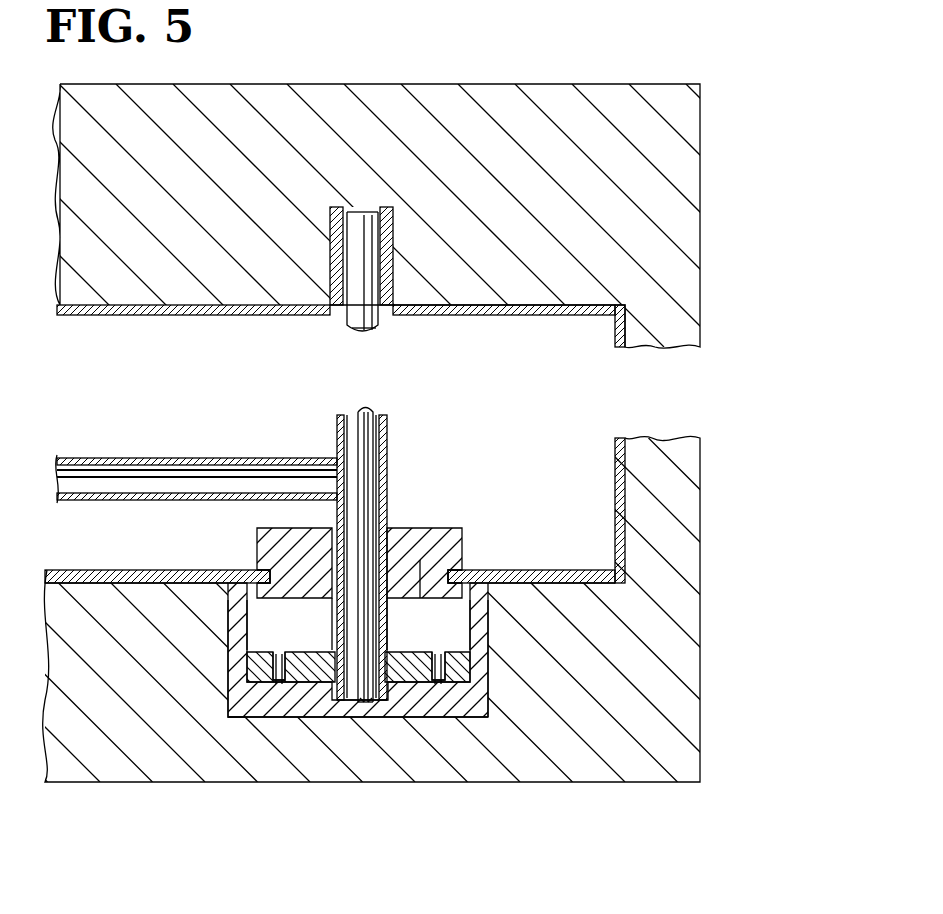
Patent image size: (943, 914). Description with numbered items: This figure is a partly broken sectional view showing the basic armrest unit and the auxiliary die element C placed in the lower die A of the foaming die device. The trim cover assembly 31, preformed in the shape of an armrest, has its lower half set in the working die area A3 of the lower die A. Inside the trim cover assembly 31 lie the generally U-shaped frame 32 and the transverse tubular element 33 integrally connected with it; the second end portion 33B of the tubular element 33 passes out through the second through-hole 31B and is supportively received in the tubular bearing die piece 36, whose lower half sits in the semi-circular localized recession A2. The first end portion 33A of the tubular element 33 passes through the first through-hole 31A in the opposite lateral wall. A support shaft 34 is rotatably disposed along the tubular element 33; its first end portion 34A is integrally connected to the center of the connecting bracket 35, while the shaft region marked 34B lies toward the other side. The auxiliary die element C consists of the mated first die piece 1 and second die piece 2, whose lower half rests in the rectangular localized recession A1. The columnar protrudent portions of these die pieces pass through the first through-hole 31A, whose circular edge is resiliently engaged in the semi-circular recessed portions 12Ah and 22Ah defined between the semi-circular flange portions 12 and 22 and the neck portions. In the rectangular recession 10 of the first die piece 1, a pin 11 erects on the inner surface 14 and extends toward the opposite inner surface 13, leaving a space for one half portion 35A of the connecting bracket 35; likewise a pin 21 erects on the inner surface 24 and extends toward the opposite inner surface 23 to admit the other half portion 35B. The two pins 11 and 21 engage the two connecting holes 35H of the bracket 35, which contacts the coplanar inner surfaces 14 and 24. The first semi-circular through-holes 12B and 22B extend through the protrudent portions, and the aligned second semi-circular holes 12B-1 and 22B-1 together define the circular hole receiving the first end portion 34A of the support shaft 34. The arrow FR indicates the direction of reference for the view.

The lower die A is at (697, 150).
The rectangular localized recession A1 is at (235, 700).
The semi-circular localized recession A2 is at (371, 250).
The working die area A3 is at (640, 316).
The first die piece 1 is at (250, 708).
The second die piece 2 is at (505, 730).
The rectangular recession 10 is at (236, 652).
The pin 11 is at (282, 655).
The semi-circular flange portion 12 is at (285, 560).
The semi-circular recessed portion 12Ah is at (256, 572).
The first semi-circular through-hole 12B is at (344, 480).
The second semi-circular hole 12B-1 is at (355, 702).
The opposite inner surface 13 is at (240, 628).
The inner surface 14 is at (300, 684).
The pin 21 is at (443, 662).
The semi-circular flange portion 22 is at (470, 548).
The semi-circular recessed portion 22Ah is at (470, 576).
The first semi-circular through-hole 22B is at (380, 496).
The second semi-circular hole 22B-1 is at (376, 705).
The opposite inner surface 23 is at (422, 592).
The inner surface 24 is at (486, 718).
The trim cover assembly 31 is at (75, 303).
The first through-hole 31A is at (450, 572).
The second through-hole 31B is at (380, 322).
The generally U-shaped frame 32 is at (157, 458).
The transverse tubular element 33 is at (389, 430).
The first end portion 33A is at (405, 545).
The second end portion 33B is at (382, 273).
The support shaft 34 is at (368, 410).
The first end portion 34A is at (363, 705).
The rod upper end 34B is at (357, 248).
The connecting bracket 35 is at (492, 630).
The one half portion 35A is at (275, 683).
The another half portion 35B is at (552, 735).
The connecting holes 35H is at (279, 683).
The tubular bearing die piece 36 is at (393, 228).
The auxiliary die element C is at (490, 652).
The front direction FR is at (96, 442).